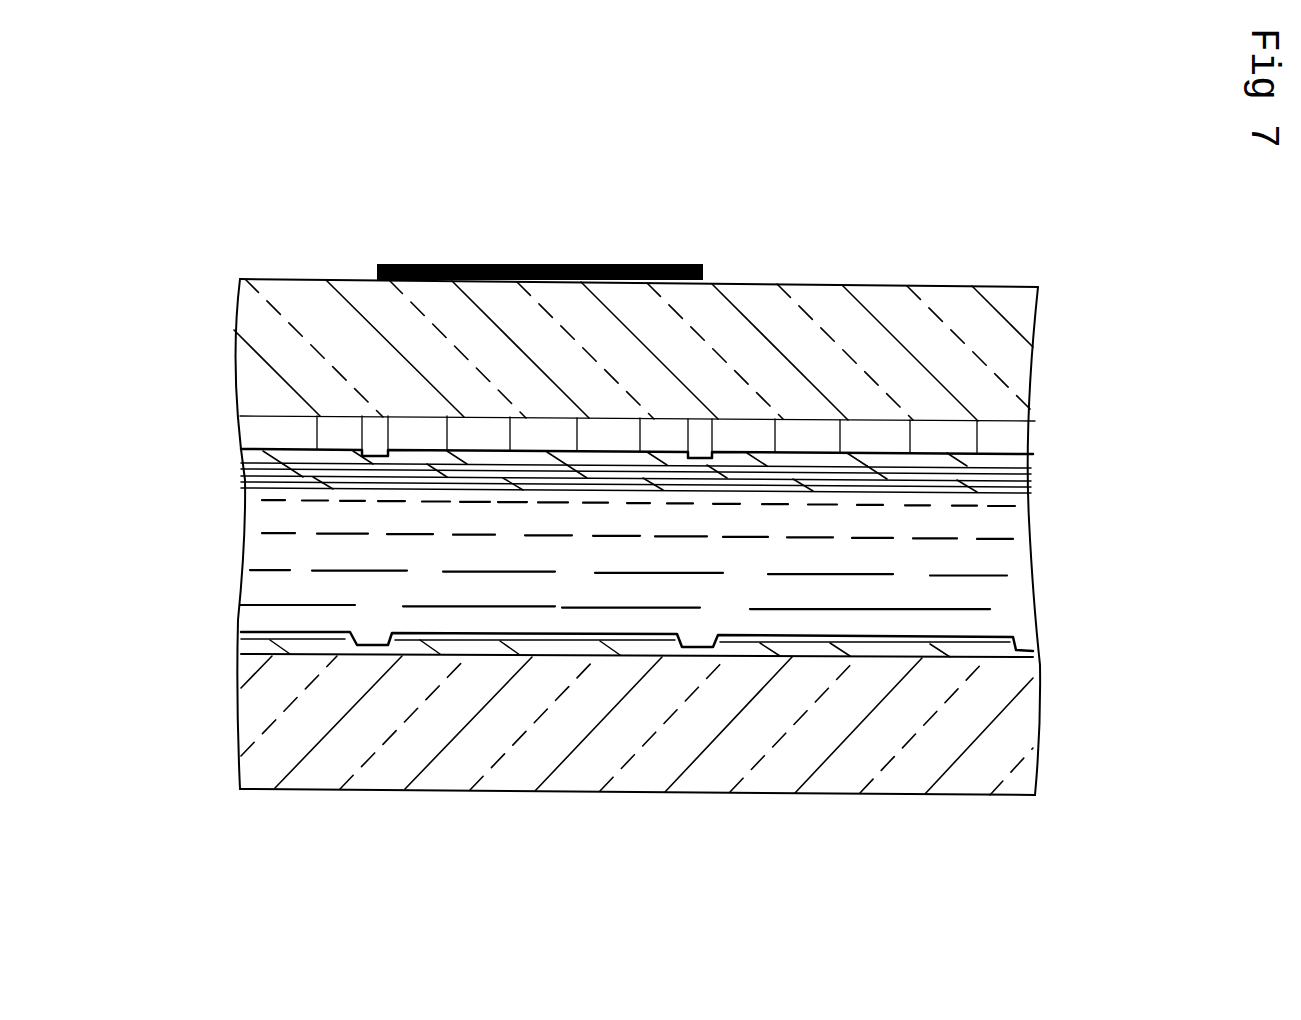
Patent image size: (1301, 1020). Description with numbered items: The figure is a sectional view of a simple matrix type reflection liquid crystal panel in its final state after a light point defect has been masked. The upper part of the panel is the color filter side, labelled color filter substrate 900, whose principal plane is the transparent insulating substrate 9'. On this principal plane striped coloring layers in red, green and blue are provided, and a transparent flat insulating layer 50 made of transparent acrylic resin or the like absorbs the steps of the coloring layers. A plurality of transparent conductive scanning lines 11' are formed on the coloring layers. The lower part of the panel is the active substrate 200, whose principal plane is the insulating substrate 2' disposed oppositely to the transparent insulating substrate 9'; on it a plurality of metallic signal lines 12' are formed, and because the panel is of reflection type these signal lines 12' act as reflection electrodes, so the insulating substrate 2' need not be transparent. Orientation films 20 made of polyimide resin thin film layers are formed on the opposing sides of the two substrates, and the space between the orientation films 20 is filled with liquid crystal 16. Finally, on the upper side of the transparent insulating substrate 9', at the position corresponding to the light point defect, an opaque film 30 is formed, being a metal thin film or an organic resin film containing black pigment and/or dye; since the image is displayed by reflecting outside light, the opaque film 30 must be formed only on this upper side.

The color filter substrate 900 is at (1053, 403).
The transparent insulating substrate 9′ is at (787, 330).
The opaque film 30 is at (497, 263).
The transparent flat insulating layer 50 is at (1032, 463).
The transparent conductive scanning lines 11′ is at (1033, 480).
The orientation films 20 is at (330, 480).
The liquid crystal 16 is at (997, 560).
The metallic signal lines 12′ is at (537, 655).
The insulating substrate 2′ is at (662, 747).
The active substrate 200 is at (1053, 693).